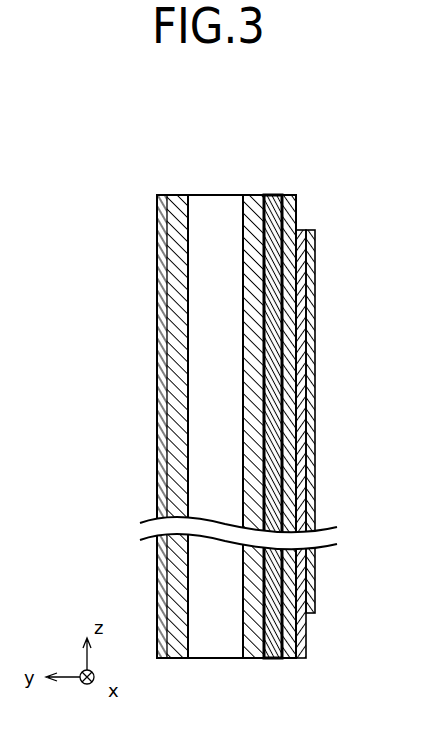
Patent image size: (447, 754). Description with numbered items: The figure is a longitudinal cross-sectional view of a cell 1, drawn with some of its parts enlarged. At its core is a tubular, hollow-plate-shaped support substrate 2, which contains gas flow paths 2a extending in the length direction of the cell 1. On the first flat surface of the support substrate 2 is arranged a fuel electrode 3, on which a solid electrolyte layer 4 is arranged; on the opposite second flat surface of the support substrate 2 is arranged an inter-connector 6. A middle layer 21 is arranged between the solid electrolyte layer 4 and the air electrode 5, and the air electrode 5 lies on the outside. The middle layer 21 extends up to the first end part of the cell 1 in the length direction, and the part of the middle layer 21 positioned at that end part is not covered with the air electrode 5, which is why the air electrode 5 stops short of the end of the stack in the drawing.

The cell 1 is at (368, 140).
The support substrate 2 is at (257, 200).
The gas flow path 2a is at (215, 198).
The fuel electrode 3 is at (276, 197).
The solid electrolyte layer 4 is at (289, 660).
The air electrode 5 is at (313, 230).
The inter-connector 6 is at (157, 251).
The middle layer 21 is at (300, 660).